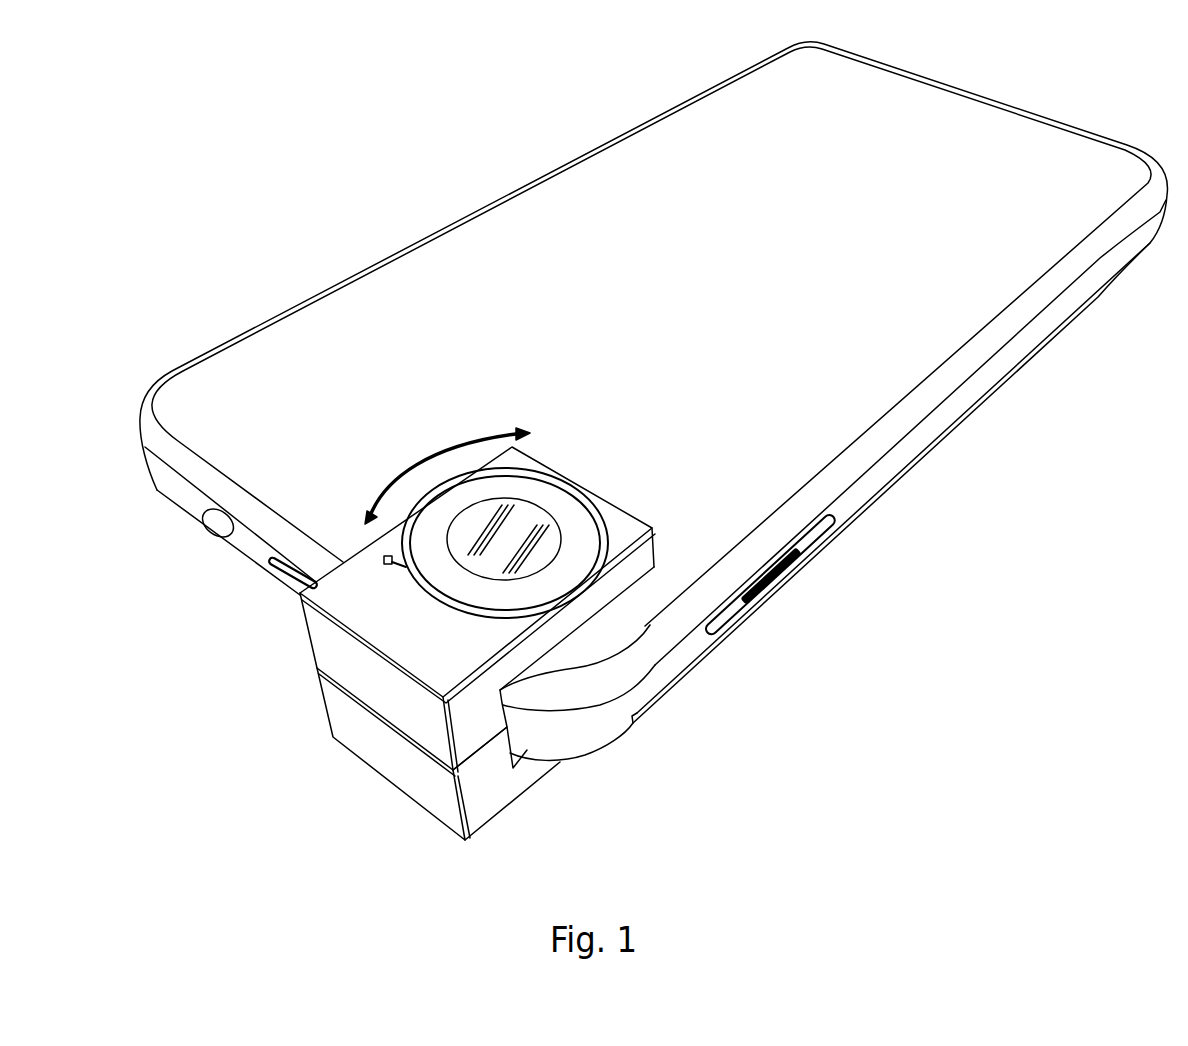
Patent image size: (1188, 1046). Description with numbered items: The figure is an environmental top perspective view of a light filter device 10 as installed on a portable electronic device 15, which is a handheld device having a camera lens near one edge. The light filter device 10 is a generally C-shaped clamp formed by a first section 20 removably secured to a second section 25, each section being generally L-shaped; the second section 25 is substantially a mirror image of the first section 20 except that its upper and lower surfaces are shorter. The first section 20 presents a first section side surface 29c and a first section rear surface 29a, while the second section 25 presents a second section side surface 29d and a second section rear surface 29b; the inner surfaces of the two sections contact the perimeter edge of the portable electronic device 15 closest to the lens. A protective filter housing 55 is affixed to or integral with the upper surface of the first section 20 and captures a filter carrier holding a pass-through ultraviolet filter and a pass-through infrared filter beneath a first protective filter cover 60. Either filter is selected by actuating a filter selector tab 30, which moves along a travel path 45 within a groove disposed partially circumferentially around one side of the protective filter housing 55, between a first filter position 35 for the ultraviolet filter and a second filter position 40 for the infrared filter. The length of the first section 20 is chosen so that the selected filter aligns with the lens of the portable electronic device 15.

The light filter device 10 is at (456, 517).
The portable electronic device 15 is at (345, 333).
The first section 20 is at (490, 688).
The second section 25 is at (435, 781).
The first section rear surface 29a is at (478, 703).
The second section rear surface 29b is at (487, 788).
The first section side surface 29c is at (335, 648).
The second section side surface 29d is at (380, 750).
The filter selector tab 30 is at (388, 564).
The first filter position 35 is at (432, 585).
The second filter position 40 is at (456, 433).
The travel path 45 is at (428, 450).
The protective filter housing 55 is at (641, 490).
The first protective filter cover 60 is at (508, 538).